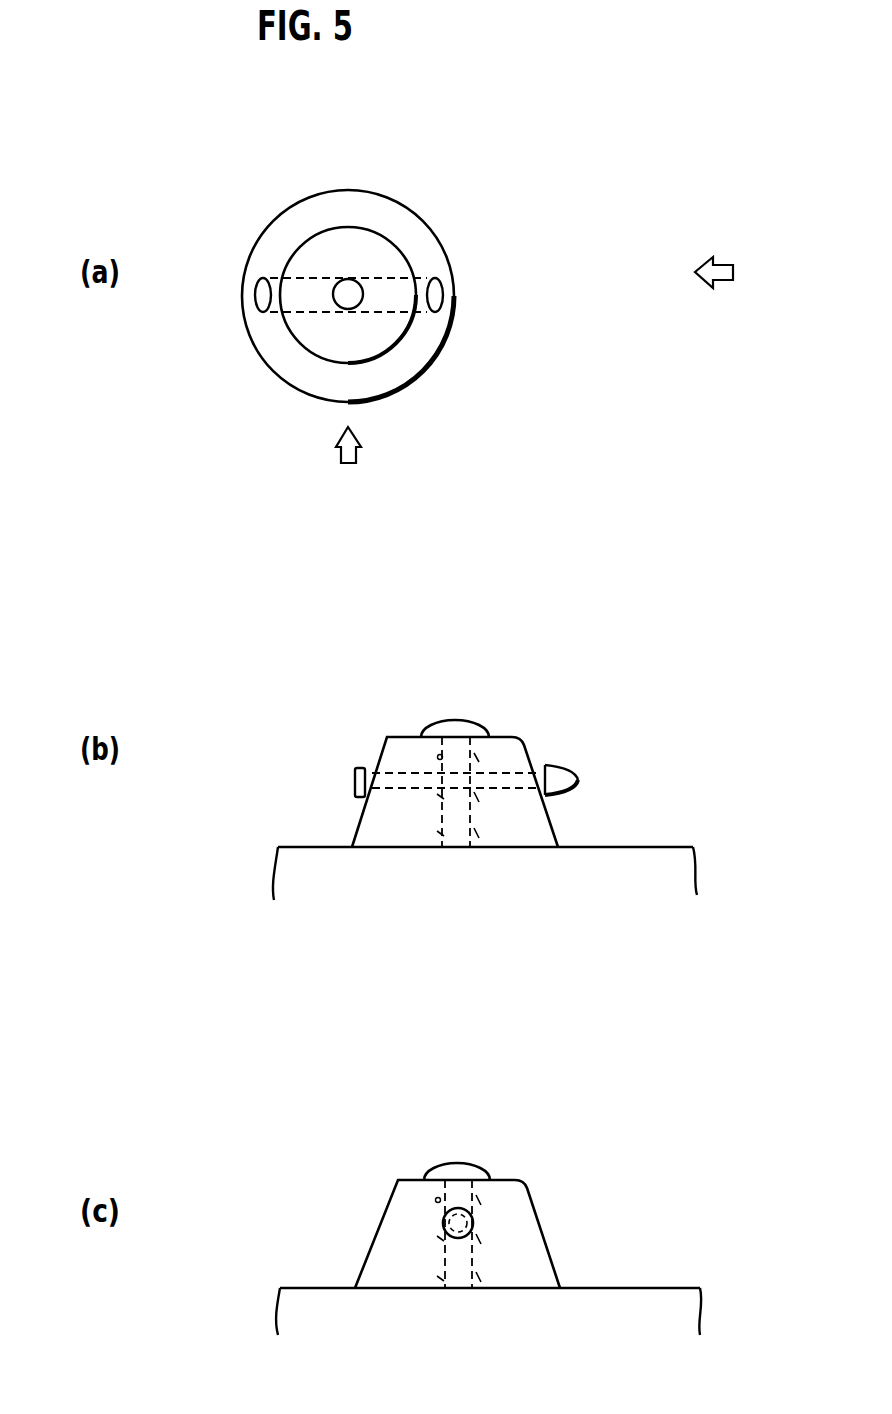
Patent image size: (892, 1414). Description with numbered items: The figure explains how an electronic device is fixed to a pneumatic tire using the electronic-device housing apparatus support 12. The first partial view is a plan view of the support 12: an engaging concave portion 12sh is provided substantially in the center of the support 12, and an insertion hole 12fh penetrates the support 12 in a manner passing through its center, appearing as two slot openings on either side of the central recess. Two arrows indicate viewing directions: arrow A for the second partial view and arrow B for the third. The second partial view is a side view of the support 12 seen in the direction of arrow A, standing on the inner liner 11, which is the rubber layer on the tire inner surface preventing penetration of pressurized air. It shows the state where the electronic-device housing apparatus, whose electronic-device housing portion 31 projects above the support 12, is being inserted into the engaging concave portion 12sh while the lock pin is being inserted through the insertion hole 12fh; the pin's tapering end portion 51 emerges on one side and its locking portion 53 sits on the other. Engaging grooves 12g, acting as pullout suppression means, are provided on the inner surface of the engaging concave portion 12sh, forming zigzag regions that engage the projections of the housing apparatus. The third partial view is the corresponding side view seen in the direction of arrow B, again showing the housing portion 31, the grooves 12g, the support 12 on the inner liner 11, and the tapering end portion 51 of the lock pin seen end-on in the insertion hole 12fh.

The inner liner 11 is at (683, 843).
The electronic-device housing apparatus support 12 is at (408, 198).
The engaging concave portion 12sh is at (349, 277).
The insertion hole 12fh is at (442, 292).
The engaging grooves 12g is at (437, 833).
The electronic-device housing portion 31 is at (455, 722).
The tapering end portion 51 is at (578, 772).
The locking portion 53 is at (352, 775).
The arrow A is at (360, 450).
The arrow B is at (718, 263).